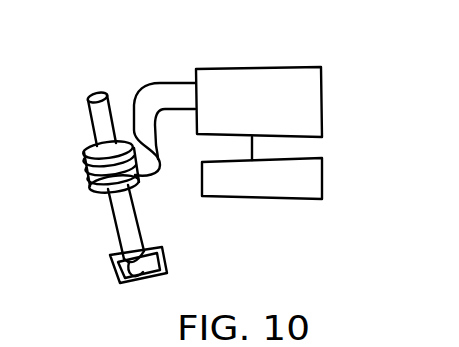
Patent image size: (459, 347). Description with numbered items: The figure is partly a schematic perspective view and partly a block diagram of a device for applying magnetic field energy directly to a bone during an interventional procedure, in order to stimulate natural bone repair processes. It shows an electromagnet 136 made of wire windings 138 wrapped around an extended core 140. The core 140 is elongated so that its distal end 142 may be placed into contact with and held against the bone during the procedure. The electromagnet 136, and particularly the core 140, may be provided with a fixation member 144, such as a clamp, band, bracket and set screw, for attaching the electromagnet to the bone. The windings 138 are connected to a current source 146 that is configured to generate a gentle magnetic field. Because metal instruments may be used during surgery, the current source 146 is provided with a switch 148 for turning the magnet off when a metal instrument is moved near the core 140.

The electromagnet 136 is at (59, 126).
The wire windings 138 is at (88, 181).
The extended core 140 is at (117, 230).
The distal end 142 is at (125, 283).
The fixation member 144 is at (243, 270).
The current source 146 is at (208, 66).
The switch 148 is at (248, 198).